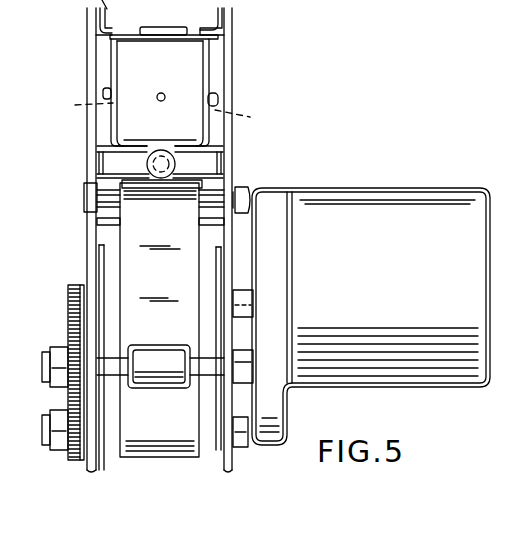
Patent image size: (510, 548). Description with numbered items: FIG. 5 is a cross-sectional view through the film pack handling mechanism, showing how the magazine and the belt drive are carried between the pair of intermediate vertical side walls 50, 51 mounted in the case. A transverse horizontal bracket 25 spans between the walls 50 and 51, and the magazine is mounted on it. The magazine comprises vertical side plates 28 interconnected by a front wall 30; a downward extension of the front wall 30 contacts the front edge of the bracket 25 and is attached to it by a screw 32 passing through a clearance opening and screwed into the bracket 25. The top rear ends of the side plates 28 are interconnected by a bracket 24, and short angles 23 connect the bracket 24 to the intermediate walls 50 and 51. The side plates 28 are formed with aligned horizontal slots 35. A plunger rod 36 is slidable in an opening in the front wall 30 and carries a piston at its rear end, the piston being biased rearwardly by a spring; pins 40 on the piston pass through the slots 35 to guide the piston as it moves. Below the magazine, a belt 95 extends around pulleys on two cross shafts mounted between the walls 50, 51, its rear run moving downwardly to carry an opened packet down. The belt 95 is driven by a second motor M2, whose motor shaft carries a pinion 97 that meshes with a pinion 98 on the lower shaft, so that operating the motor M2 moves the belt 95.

The short angles 23 is at (217, 25).
The bracket 24 is at (131, 27).
The transverse horizontal bracket 25 is at (110, 163).
The side plates 28 is at (164, 93).
The front wall 30 is at (193, 128).
The screw 32 is at (216, 167).
The horizontal slots 35 is at (165, 113).
The plunger rod 36 is at (160, 101).
The pins 40 is at (108, 92).
The intermediate vertical side wall 50 is at (227, 472).
The intermediate vertical side wall 51 is at (92, 472).
The belt 95 is at (127, 238).
The pinion 97 is at (72, 300).
The pinion 98 is at (72, 422).
The second motor M2 is at (392, 178).